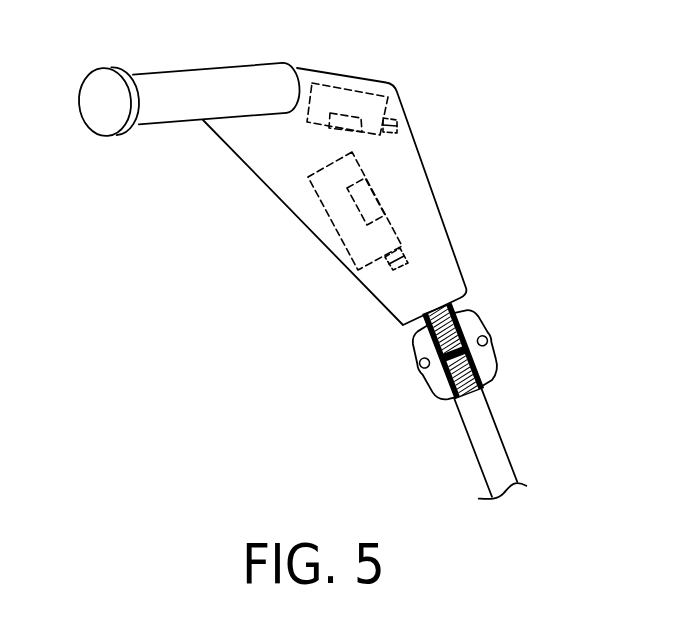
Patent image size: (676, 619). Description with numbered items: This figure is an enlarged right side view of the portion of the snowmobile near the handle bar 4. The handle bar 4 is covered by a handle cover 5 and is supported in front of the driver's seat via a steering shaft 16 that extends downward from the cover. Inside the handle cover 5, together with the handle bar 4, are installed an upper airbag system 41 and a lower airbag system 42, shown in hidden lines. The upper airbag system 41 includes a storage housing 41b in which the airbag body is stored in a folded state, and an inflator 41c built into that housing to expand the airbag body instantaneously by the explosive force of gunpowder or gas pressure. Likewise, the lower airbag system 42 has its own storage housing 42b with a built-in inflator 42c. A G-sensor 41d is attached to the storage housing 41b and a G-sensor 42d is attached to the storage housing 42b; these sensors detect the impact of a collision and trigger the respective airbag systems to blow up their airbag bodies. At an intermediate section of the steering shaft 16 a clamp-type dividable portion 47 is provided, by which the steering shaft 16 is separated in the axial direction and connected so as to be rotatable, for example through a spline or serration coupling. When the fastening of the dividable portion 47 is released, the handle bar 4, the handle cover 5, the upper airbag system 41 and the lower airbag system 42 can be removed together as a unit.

The handle bar 4 is at (212, 80).
The handle cover 5 is at (418, 145).
The steering shaft 16 is at (505, 443).
The upper airbag system 41 is at (340, 105).
The storage housing 41b is at (397, 100).
The inflator 41c is at (330, 128).
The G-sensor 41d is at (402, 128).
The lower airbag system 42 is at (360, 264).
The storage housing 42b is at (327, 208).
The inflator 42c is at (358, 228).
The G-sensor 42d is at (393, 274).
The dividable portion 47 is at (470, 319).